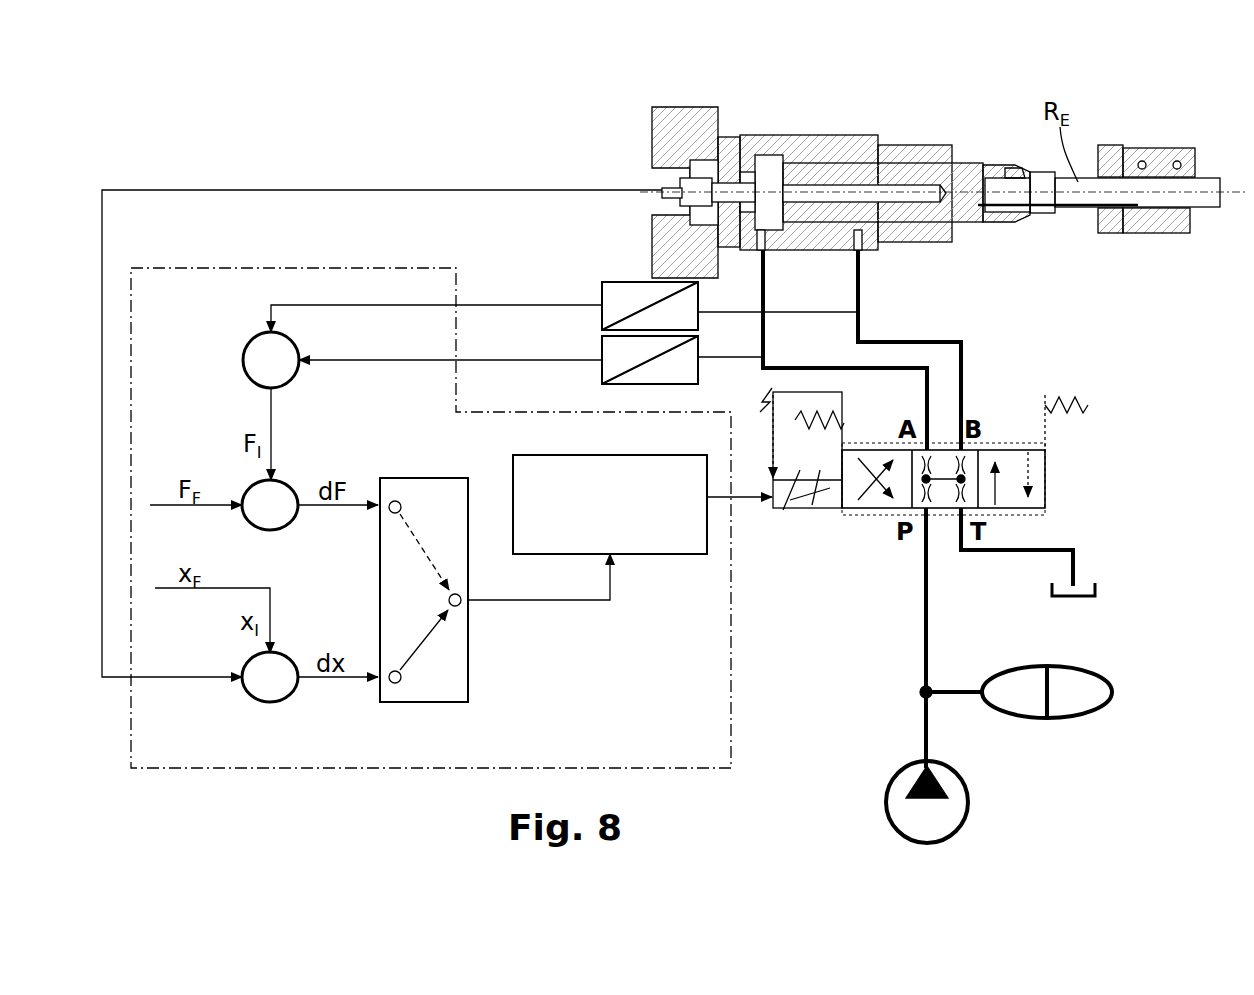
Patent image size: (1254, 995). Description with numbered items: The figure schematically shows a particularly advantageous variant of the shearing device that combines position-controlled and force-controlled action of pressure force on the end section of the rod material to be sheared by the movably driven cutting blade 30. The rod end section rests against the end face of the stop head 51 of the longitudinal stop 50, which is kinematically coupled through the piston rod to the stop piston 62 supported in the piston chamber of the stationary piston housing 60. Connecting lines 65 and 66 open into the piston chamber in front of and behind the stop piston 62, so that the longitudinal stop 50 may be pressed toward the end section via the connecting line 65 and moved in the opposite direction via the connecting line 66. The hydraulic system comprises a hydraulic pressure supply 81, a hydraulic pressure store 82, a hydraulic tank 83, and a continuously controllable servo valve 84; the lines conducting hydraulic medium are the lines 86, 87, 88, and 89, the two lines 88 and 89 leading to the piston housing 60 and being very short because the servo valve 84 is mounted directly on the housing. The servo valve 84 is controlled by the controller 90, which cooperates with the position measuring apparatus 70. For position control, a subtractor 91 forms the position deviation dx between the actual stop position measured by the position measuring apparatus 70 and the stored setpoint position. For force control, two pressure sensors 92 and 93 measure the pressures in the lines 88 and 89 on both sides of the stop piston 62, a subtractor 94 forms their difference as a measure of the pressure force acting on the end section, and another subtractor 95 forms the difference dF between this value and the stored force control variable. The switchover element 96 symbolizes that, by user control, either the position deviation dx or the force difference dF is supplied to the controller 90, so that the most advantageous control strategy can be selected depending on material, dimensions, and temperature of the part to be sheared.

The cutting blade 30 is at (1112, 143).
The longitudinal stop 50 is at (982, 160).
The stop head 51 is at (1045, 215).
The piston housing 60 is at (901, 128).
The stop piston 62 is at (805, 160).
The connecting line 65 is at (770, 255).
The connecting line 66 is at (862, 255).
The position measuring apparatus 70 is at (700, 172).
The hydraulic pressure supply 81 is at (887, 802).
The hydraulic pressure store 82 is at (1097, 692).
The hydraulic tank 83 is at (1088, 582).
The servo valve 84 is at (862, 520).
The hydraulic line 86 is at (924, 607).
The hydraulic line 87 is at (1060, 548).
The hydraulic line 88 is at (929, 386).
The hydraulic line 89 is at (941, 340).
The controller 90 is at (627, 548).
The subtractor 91 is at (265, 697).
The pressure sensor 92 is at (601, 350).
The pressure sensor 93 is at (601, 292).
The subtractor 94 is at (245, 362).
The subtractor 95 is at (284, 484).
The switchover element 96 is at (470, 664).